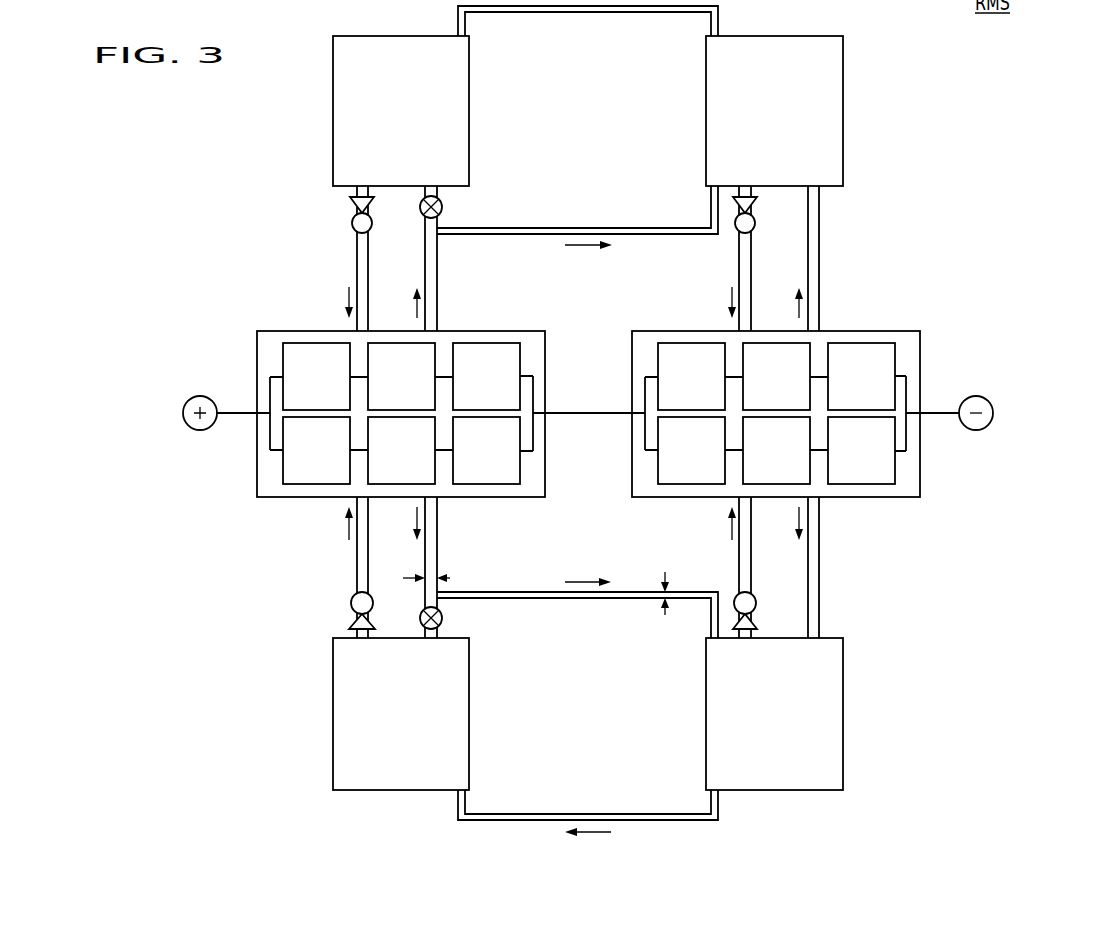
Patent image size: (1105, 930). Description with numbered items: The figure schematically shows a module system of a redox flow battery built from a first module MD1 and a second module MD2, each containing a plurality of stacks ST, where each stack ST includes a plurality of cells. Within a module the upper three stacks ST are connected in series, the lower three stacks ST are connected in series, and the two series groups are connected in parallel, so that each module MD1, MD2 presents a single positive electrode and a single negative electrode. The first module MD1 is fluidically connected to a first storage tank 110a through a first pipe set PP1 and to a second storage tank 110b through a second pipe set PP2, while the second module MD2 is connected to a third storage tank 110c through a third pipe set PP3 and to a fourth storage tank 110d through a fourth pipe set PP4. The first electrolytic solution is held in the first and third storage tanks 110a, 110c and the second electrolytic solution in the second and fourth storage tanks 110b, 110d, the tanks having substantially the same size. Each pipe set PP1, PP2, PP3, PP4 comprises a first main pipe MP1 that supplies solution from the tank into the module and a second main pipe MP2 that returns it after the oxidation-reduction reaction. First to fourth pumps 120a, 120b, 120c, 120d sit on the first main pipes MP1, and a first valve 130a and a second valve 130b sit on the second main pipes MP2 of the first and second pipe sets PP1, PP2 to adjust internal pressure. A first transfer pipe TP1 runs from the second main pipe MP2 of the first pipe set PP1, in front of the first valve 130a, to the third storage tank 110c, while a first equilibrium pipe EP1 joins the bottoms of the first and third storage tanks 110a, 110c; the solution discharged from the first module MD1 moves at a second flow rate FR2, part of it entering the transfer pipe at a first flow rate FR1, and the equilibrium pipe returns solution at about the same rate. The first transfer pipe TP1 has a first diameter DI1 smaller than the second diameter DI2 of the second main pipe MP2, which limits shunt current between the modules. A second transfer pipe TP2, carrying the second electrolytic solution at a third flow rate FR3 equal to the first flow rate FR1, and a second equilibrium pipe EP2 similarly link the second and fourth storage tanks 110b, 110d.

The first storage tank 110a is at (333, 712).
The second storage tank 110b is at (333, 110).
The third storage tank 110c is at (843, 712).
The fourth storage tank 110d is at (843, 110).
The first pump 120a is at (351, 603).
The second pump 120b is at (352, 222).
The third pump 120c is at (755, 603).
The fourth pump 120d is at (755, 222).
The first valve 130a is at (442, 618).
The second valve 130b is at (442, 207).
The first equilibrium pipe EP1 is at (587, 814).
The second equilibrium pipe EP2 is at (585, 12).
The first transfer pipe TP1 is at (588, 599).
The second transfer pipe TP2 is at (585, 228).
The first flow rate FR1 is at (588, 570).
The second flow rate FR2 is at (399, 523).
The third flow rate FR3 is at (588, 257).
The first diameter DI1 is at (667, 592).
The second diameter DI2 is at (437, 577).
The first module MD1 is at (146, 347).
The second module MD2 is at (1033, 347).
The stack ST is at (290, 357).
The first pipe set PP1 is at (255, 540).
The second pipe set PP2 is at (255, 238).
The third pipe set PP3 is at (915, 540).
The fourth pipe set PP4 is at (915, 238).
The first main pipe MP1 is at (362, 247).
The second main pipe MP2 is at (430, 272).